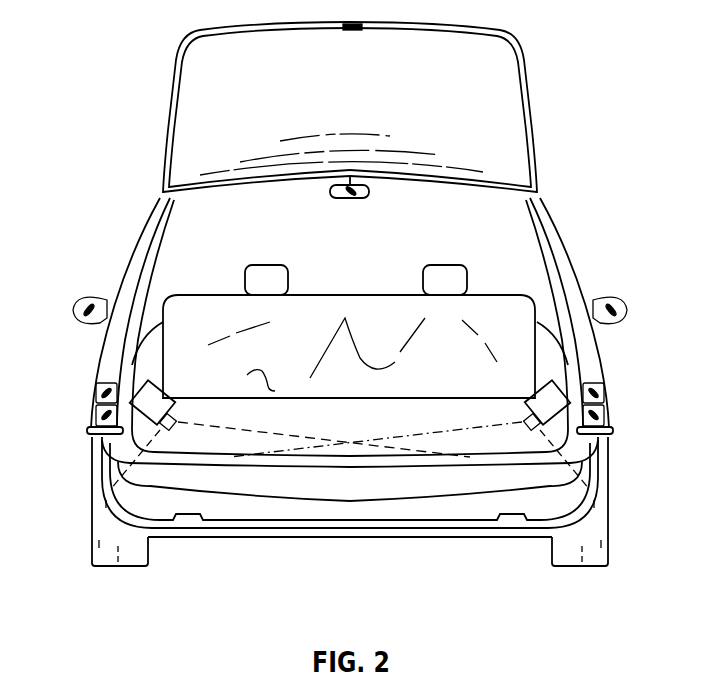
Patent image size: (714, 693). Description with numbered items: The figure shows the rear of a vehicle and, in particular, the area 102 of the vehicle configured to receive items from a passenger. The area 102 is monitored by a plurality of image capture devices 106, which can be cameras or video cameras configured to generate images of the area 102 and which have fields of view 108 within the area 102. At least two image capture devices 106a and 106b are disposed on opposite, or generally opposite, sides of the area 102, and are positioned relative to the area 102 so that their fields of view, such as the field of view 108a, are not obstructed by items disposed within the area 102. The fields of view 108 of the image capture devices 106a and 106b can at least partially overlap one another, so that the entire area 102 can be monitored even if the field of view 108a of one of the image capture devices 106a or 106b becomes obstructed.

The area 102 is at (192, 95).
The image capture devices 106 is at (346, 417).
The image capture device 106a is at (147, 395).
The image capture device 106b is at (553, 395).
The fields of view 108 is at (350, 520).
The field of view 108a is at (178, 440).